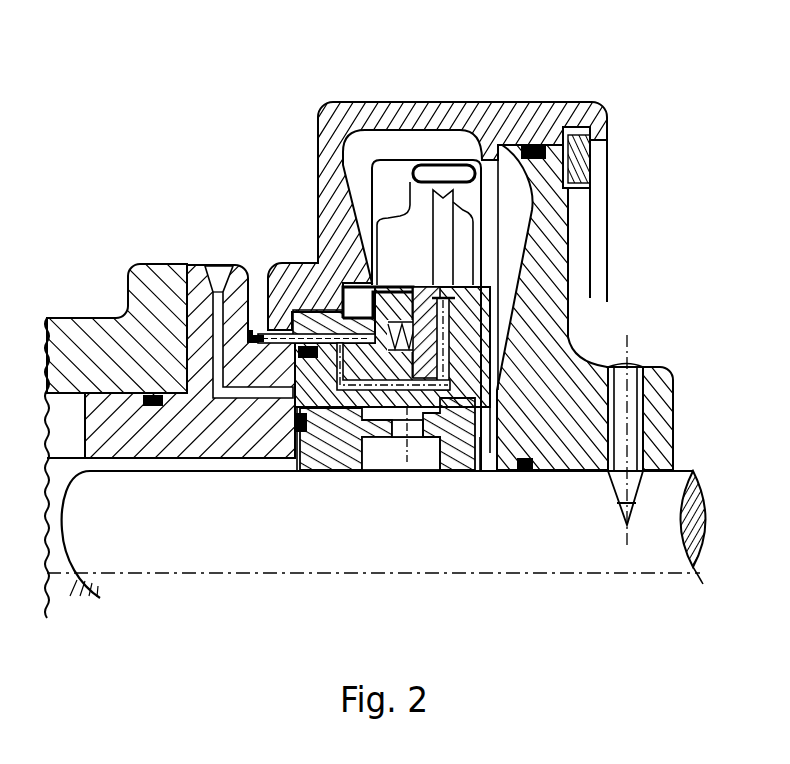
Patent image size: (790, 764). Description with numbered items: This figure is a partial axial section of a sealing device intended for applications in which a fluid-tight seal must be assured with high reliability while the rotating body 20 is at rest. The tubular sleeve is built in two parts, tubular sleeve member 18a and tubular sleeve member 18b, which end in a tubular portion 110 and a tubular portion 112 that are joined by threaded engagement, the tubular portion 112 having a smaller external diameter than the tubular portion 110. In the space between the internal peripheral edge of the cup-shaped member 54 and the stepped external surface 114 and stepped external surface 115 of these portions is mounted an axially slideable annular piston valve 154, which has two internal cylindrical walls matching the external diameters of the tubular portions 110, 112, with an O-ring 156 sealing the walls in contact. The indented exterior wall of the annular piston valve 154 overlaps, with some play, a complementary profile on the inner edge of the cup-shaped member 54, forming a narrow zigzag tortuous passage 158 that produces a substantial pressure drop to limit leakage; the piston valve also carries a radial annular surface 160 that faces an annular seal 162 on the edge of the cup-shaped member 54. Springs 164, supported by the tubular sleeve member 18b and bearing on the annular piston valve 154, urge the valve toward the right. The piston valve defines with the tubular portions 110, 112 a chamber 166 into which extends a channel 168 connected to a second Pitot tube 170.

The rotating body 20 is at (467, 271).
The cup-shaped member 54 is at (372, 118).
The tubular sleeve member 18a is at (123, 440).
The tubular sleeve member 18b is at (478, 437).
The tubular portion 110 is at (322, 430).
The tubular portion 112 is at (380, 385).
The stepped external surface 114 is at (230, 400).
The stepped external surface 115 is at (313, 325).
The annular piston valve 154 is at (335, 312).
The O-ring 156 is at (300, 352).
The tortuous passage 158 is at (332, 260).
The annular surface 160 is at (256, 334).
The annular seal 162 is at (300, 336).
The springs 164 is at (437, 432).
The chamber 166 is at (358, 430).
The channel 168 is at (445, 350).
The second Pitot tube 170 is at (447, 245).